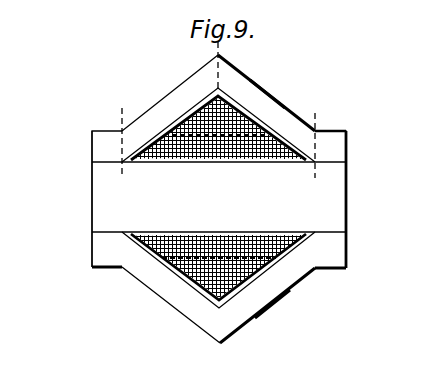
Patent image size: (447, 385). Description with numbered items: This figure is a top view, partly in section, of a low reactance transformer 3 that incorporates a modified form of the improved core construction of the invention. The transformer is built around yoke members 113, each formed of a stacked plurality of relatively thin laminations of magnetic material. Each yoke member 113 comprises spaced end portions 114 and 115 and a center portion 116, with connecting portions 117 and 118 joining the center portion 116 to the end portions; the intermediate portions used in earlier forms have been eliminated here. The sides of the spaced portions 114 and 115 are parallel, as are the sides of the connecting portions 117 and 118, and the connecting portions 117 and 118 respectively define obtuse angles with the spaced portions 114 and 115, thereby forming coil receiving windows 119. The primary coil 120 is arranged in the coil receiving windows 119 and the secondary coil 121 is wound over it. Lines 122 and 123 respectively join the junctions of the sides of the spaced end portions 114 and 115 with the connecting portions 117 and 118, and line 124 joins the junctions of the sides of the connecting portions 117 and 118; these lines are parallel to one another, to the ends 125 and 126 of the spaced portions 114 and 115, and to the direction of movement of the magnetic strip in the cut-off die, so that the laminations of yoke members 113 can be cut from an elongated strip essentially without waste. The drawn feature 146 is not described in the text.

The low reactance transformer 3 is at (333, 193).
The yoke member 113 is at (255, 73).
The spaced end portion 114 is at (107, 145).
The spaced end portion 115 is at (332, 150).
The center portion 116 is at (207, 73).
The connecting portion 117 is at (160, 100).
The connecting portion 118 is at (280, 103).
The coil receiving window 119 is at (275, 128).
The primary coil 120 is at (182, 230).
The secondary coil 121 is at (200, 100).
The line 122 is at (122, 128).
The line 123 is at (317, 117).
The line 124 is at (220, 47).
The end 125 is at (92, 153).
The end 126 is at (345, 156).
The bottom flange 146 is at (92, 255).